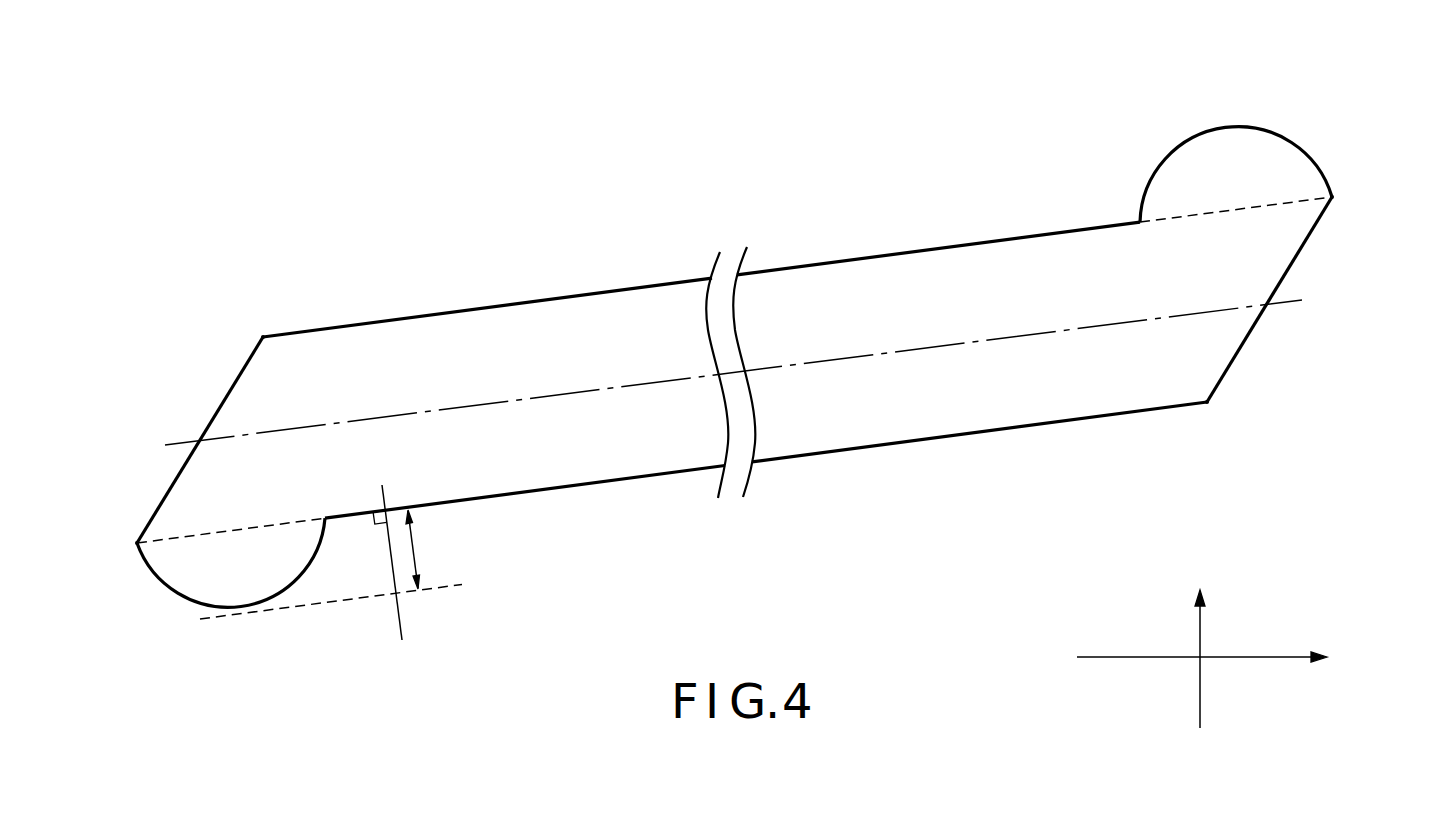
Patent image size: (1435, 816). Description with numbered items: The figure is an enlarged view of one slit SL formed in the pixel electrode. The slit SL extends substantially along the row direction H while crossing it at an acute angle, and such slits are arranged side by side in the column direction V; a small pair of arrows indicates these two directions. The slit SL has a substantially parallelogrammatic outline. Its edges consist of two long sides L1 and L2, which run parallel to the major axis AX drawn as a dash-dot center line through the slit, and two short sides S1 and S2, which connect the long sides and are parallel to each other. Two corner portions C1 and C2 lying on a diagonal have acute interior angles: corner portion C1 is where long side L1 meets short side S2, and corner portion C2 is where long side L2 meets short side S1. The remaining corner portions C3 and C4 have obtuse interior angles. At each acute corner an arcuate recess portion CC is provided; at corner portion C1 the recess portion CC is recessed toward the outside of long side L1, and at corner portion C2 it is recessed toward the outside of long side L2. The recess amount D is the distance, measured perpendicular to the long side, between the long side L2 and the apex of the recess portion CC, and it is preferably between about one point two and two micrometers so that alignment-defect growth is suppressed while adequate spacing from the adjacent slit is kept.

The slit SL is at (790, 255).
The long side L1 is at (1025, 233).
The long side L2 is at (582, 485).
The short side S1 is at (218, 395).
The short side S2 is at (1300, 253).
The corner portion C1 is at (1334, 197).
The corner portion C2 is at (135, 547).
The corner portion C3 is at (1209, 404).
The corner portion C4 is at (263, 336).
The arcuate recess portion CC is at (192, 608).
The major axis AX is at (1287, 302).
The recess amount D is at (331, 562).
The column direction V is at (1210, 650).
The row direction H is at (1214, 658).